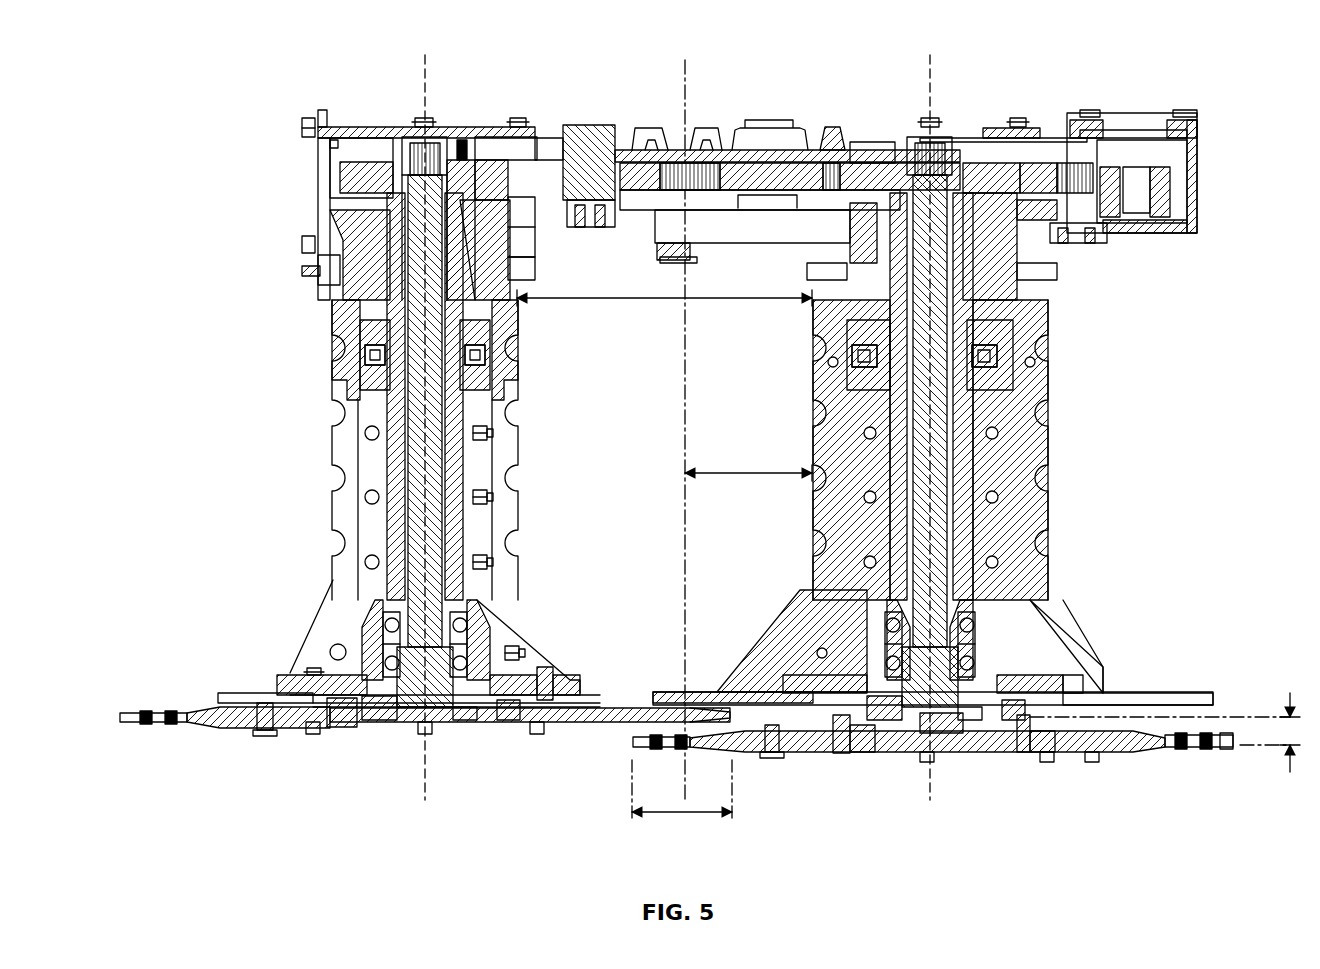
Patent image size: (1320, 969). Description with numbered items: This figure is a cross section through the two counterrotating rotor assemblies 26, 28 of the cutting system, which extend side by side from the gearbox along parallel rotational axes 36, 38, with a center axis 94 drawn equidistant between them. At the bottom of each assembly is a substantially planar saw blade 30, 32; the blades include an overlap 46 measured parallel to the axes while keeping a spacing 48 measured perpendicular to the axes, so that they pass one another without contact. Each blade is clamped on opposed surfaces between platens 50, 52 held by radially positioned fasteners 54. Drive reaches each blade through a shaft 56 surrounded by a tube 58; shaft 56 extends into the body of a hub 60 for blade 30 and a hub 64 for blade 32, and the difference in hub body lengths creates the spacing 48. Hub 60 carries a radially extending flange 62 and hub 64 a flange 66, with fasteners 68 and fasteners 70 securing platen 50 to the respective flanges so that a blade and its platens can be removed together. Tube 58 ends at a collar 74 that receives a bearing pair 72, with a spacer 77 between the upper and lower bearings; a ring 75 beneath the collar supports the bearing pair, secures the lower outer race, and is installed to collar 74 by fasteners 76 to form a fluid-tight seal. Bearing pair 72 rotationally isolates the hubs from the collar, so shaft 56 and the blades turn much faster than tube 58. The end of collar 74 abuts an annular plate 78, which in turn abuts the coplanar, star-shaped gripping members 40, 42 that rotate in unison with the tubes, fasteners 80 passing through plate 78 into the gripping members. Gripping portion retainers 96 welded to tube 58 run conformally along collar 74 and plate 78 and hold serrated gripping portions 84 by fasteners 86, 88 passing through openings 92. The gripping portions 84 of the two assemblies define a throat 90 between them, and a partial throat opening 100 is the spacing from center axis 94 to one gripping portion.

The rotor assembly 26 is at (298, 346).
The rotor assembly 28 is at (1178, 270).
The blade 30 is at (132, 724).
The blade 32 is at (1197, 750).
The rotational axis 36 is at (432, 72).
The rotational axis 38 is at (936, 72).
The gripping member 40 is at (248, 692).
The gripping member 42 is at (672, 693).
The overlap 46 is at (658, 815).
The spacing 48 is at (1290, 765).
The platen 50 is at (190, 713).
The platen 52 is at (200, 724).
The fasteners 54 is at (262, 736).
The shaft 56 is at (410, 522).
The tube 58 is at (387, 477).
The hub 60 is at (400, 722).
The flange 62 is at (462, 722).
The hub 64 is at (1020, 690).
The flange 66 is at (1060, 733).
The fasteners 68 is at (340, 728).
The fasteners 70 is at (838, 755).
The bearing pair 72 is at (995, 640).
The collar 74 is at (490, 617).
The ring 75 is at (385, 640).
The fasteners 76 is at (372, 722).
The spacer 77 is at (868, 630).
The annular plate 78 is at (283, 690).
The fasteners 80 is at (313, 668).
The gripping portion 84 is at (508, 458).
The fasteners 86 is at (366, 430).
The fasteners 88 is at (486, 425).
The throat 90 is at (650, 300).
The openings 92 is at (1050, 352).
The center axis 94 is at (692, 72).
The gripping portion retainer 96 is at (493, 480).
The partial throat opening 100 is at (765, 477).